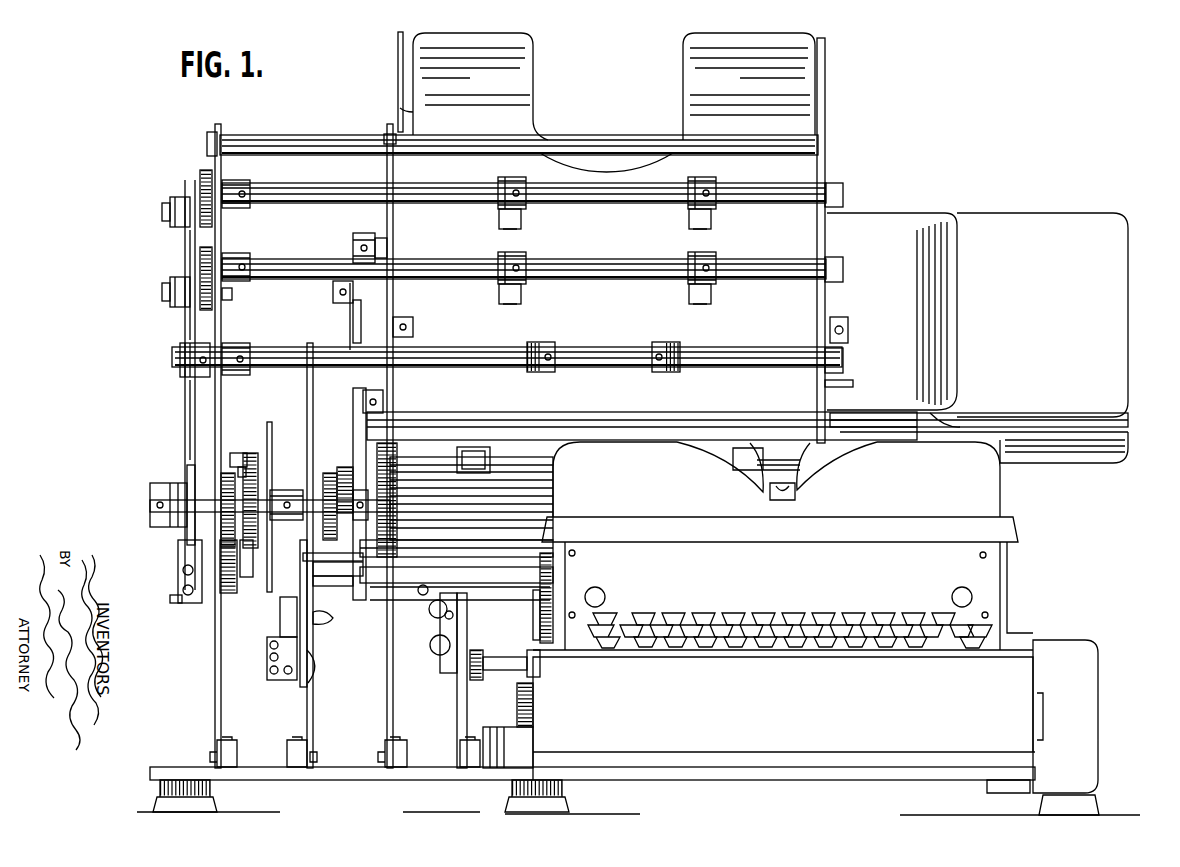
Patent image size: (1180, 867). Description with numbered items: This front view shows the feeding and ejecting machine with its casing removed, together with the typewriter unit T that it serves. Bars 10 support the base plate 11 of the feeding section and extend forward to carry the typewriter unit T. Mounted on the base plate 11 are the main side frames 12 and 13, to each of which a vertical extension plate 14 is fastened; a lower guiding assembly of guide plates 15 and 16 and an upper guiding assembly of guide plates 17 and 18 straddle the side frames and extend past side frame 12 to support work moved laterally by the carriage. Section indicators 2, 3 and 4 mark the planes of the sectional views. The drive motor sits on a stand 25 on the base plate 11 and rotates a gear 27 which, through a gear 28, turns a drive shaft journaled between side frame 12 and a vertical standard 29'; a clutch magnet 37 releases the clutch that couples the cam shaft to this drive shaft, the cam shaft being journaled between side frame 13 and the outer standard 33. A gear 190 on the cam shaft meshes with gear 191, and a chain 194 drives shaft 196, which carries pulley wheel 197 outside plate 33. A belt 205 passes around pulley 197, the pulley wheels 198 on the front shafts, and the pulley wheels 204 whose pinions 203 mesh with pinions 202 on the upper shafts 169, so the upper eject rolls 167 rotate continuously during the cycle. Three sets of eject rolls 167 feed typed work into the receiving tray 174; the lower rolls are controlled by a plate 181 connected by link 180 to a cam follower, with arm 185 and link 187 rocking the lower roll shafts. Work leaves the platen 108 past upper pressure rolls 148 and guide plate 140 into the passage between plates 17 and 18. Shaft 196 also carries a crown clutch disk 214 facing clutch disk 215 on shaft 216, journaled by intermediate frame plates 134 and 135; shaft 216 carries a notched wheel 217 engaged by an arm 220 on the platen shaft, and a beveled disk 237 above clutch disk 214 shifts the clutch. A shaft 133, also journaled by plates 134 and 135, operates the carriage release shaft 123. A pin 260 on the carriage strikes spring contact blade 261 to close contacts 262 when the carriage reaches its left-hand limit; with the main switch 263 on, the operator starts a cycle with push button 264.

The section line 2- 2 is at (120, 108).
The section line 3- 3 is at (407, 72).
The section line 4- 4 is at (105, 380).
The vertical extension plate 14 is at (70, 478).
The outer standard 33 is at (215, 158).
The main side frame 13 is at (387, 216).
The main side frame 12 is at (826, 232).
The receiving tray 174 is at (683, 80).
The shafts 169 is at (742, 200).
The upper eject rolls 167 is at (690, 215).
The pinions 202 is at (200, 185).
The pinions 203 is at (190, 228).
The pulley wheels 204 is at (185, 268).
The pulley wheels 198 is at (185, 340).
The belt 205 is at (193, 417).
The plate 181 is at (353, 252).
The arm 185 is at (340, 300).
The link 187 is at (355, 318).
The guide plate 17 is at (890, 215).
The guide plate 18 is at (1025, 228).
The guide plate 15 is at (952, 420).
The guide plate 16 is at (1060, 455).
The upper guide plate 140 is at (410, 433).
The upper pressure rolls 148 is at (490, 455).
The platen 108 is at (425, 480).
The release shaft 123 is at (440, 545).
The intermediate frame plate 135 is at (307, 380).
The intermediate frame plate 134 is at (280, 410).
The link 180 is at (353, 398).
The shaft 196 is at (147, 506).
The pulley wheel 197 is at (185, 471).
The crown clutch disk 214 is at (240, 482).
The beveled disk 237 is at (240, 453).
The clutch disk 215 is at (262, 478).
The shaft 216 is at (272, 496).
The wheel 217 is at (326, 470).
The arm 220 is at (340, 467).
The chain 194 is at (200, 545).
The gear 191 is at (257, 570).
The gear 190 is at (242, 590).
The contacts 262 is at (278, 603).
The shaft 133 is at (317, 562).
The pin 260 is at (345, 578).
The spring contact blade 261 is at (314, 586).
The main switch 263 is at (317, 632).
The push button 264 is at (320, 682).
The clutch magnet 37 is at (430, 645).
The vertical standard 29' is at (476, 680).
The gear 28 is at (540, 602).
The gear 27 is at (540, 630).
The stand 25 is at (505, 726).
The typewriter unit T is at (1005, 690).
The base plate 11 is at (330, 773).
The bars 10 is at (560, 786).